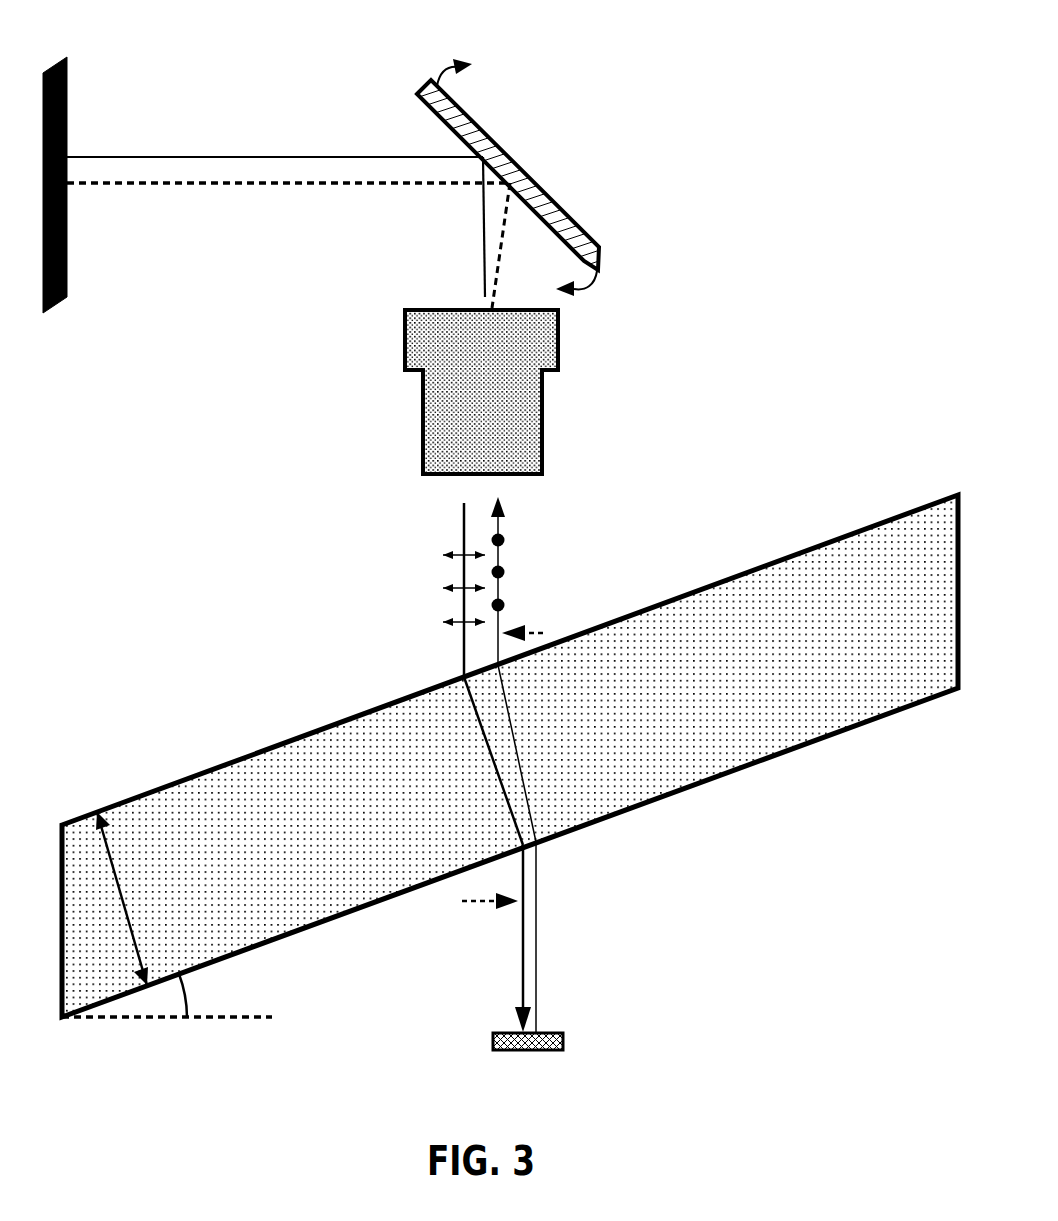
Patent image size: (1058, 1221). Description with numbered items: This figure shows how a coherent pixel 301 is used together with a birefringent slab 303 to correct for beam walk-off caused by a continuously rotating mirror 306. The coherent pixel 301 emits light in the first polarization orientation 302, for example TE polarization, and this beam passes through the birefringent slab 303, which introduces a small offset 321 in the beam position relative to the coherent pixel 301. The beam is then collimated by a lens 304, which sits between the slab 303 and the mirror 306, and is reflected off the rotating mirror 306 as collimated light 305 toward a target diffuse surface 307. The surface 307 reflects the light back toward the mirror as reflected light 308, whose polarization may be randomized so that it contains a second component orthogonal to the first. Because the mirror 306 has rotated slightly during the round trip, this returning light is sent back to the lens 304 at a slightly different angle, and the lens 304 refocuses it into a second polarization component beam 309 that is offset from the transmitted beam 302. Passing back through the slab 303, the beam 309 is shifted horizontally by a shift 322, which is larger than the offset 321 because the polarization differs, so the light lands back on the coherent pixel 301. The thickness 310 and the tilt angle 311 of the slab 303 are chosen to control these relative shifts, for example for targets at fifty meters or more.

The coherent pixel 301 is at (563, 1038).
The light in the first polarization orientation 302 is at (515, 573).
The birefringent slab 303 is at (822, 545).
The lens 304 is at (558, 352).
The collimated light 305 is at (483, 229).
The continuously rotating mirror 306 is at (602, 260).
The target diffuse surface 307 is at (68, 67).
The reflected light 308 is at (200, 185).
The second polarization component beam 309 is at (446, 573).
The thickness 310 is at (122, 885).
The tilt angle 311 is at (192, 998).
The offset 321 is at (533, 627).
The horizontal shift 322 is at (482, 907).